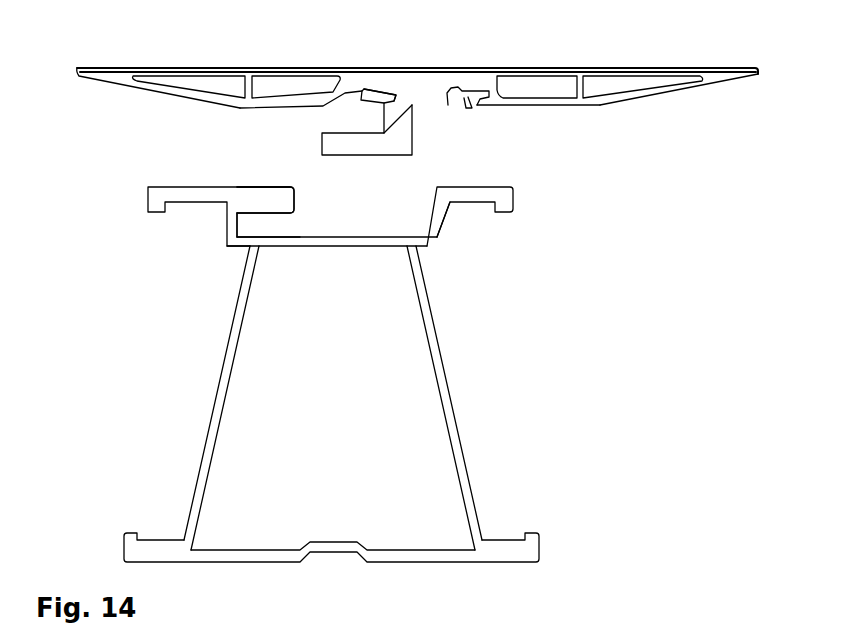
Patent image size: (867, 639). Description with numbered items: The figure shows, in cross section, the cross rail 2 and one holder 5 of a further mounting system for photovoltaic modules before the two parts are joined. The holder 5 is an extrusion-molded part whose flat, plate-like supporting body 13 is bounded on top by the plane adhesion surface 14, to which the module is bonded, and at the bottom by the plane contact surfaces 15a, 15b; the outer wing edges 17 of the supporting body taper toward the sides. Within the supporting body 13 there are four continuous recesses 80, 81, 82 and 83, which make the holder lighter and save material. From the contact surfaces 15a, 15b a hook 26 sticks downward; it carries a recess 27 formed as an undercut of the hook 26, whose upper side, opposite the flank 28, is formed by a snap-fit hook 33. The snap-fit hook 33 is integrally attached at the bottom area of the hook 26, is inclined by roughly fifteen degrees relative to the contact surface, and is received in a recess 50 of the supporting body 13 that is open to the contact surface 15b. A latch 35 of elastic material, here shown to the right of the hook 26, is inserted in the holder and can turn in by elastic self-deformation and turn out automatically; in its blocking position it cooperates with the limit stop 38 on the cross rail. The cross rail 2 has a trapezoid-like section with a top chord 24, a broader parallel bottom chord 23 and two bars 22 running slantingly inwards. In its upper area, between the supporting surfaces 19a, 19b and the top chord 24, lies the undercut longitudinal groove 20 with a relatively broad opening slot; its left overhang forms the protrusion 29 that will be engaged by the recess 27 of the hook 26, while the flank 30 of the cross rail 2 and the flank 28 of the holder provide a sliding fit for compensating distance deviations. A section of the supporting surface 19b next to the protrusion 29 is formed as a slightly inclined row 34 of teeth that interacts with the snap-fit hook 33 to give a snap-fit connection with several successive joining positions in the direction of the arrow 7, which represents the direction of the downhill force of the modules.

The cross rail 2 is at (331, 333).
The holder 5 is at (417, 104).
The arrow 7 is at (486, 263).
The supporting body 13 is at (431, 80).
The adhesion surface 14 is at (474, 66).
The contact surface 15a is at (540, 107).
The contact surface 15b is at (278, 107).
The outer wing edge 17 is at (170, 97).
The supporting surface 19a is at (477, 197).
The supporting surface 19b is at (245, 198).
The undercut longitudinal groove 20 is at (398, 199).
The bars 22 is at (217, 395).
The bottom chord 23 is at (260, 553).
The top chord 24 is at (360, 240).
The hook 26 is at (402, 135).
The recess 27 is at (375, 117).
The flank 28 is at (352, 127).
The protrusion 29 is at (287, 200).
The flank 30 is at (270, 217).
The snap-fit hook 33 is at (374, 93).
The row of teeth 34 is at (270, 187).
The latch 35 is at (463, 101).
The limit stop 38 is at (434, 192).
The recess 50 is at (363, 90).
The continuous recess 80 is at (185, 82).
The continuous recess 81 is at (278, 82).
The continuous recess 82 is at (535, 83).
The continuous recess 83 is at (615, 83).